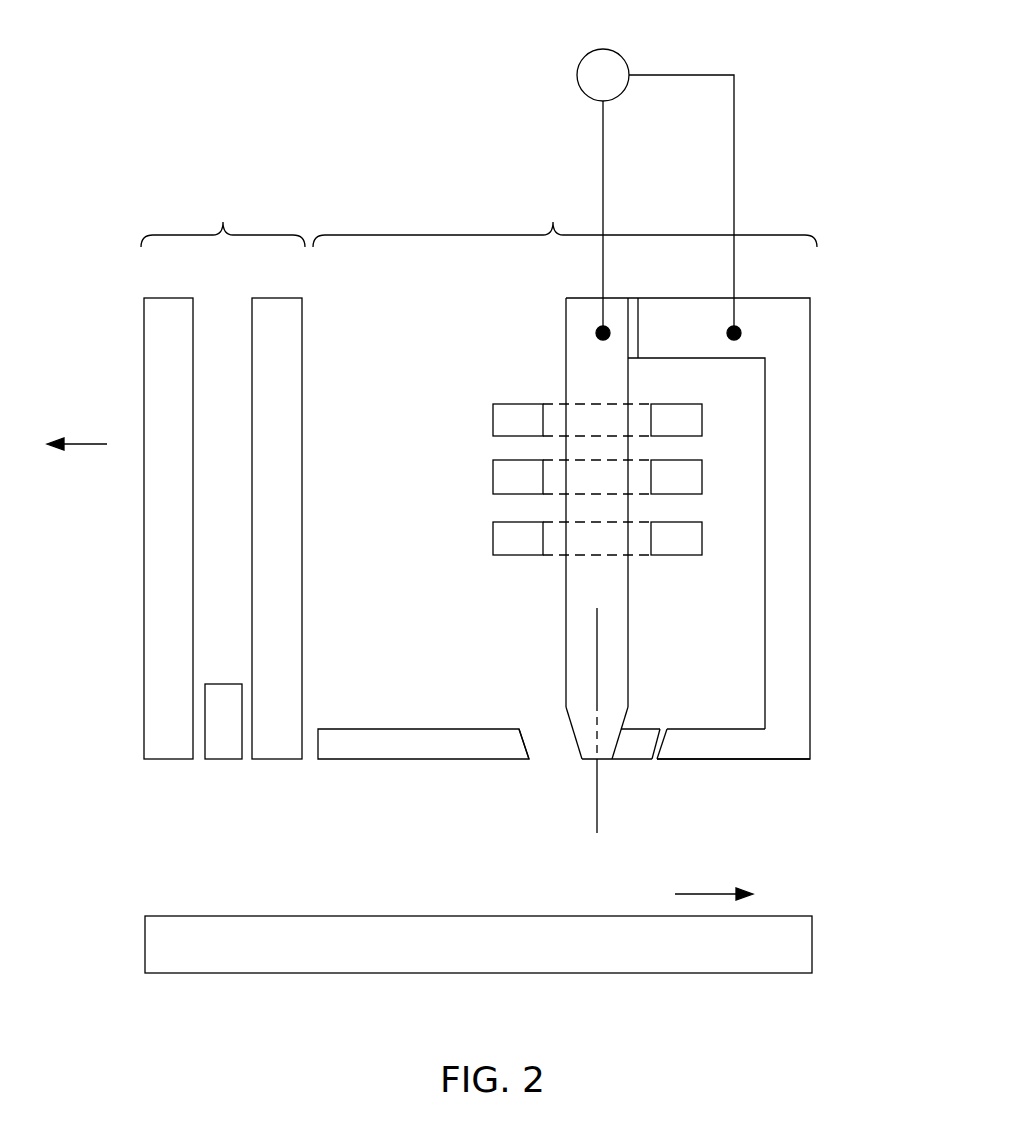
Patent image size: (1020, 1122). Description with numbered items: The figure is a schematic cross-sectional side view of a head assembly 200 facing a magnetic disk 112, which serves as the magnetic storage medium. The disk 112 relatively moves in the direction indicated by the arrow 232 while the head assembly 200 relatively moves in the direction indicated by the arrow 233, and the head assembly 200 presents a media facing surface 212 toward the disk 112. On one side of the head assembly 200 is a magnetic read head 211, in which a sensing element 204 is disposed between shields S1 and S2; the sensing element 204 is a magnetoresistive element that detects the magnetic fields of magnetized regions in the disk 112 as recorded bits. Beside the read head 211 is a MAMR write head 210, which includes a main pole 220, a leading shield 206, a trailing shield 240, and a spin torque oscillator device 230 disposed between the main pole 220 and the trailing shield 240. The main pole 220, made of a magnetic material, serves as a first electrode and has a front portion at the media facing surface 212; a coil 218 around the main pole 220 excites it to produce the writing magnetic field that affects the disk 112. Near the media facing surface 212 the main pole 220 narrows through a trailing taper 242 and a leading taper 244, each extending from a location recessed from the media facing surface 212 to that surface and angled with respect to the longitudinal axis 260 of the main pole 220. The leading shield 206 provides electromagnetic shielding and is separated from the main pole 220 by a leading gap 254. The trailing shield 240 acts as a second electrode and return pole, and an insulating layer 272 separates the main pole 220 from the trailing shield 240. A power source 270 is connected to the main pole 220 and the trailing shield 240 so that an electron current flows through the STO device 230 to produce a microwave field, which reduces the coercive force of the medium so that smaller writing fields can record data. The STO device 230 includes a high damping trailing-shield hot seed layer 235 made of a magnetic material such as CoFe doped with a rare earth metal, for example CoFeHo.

The head assembly 200 is at (174, 124).
The magnetic read head 211 is at (223, 217).
The MAMR write head 210 is at (565, 216).
The shield S1 is at (167, 748).
The shield S2 is at (277, 748).
The sensing element 204 is at (222, 752).
The leading shield 206 is at (368, 761).
The leading gap 254 is at (552, 758).
The arrow 233 is at (88, 444).
The arrow 232 is at (705, 894).
The power source 270 is at (625, 58).
The insulating layer 272 is at (638, 328).
The coil 218 is at (508, 556).
The main pole 220 is at (612, 593).
The leading taper 244 is at (566, 717).
The trailing taper 242 is at (613, 707).
The spin torque oscillator device 230 is at (632, 740).
The high damping TS hot seed layer 235 is at (657, 760).
The media facing surface 212 is at (705, 760).
The trailing shield 240 is at (778, 745).
The longitudinal axis 260 is at (595, 827).
The magnetic disk 112 is at (812, 940).